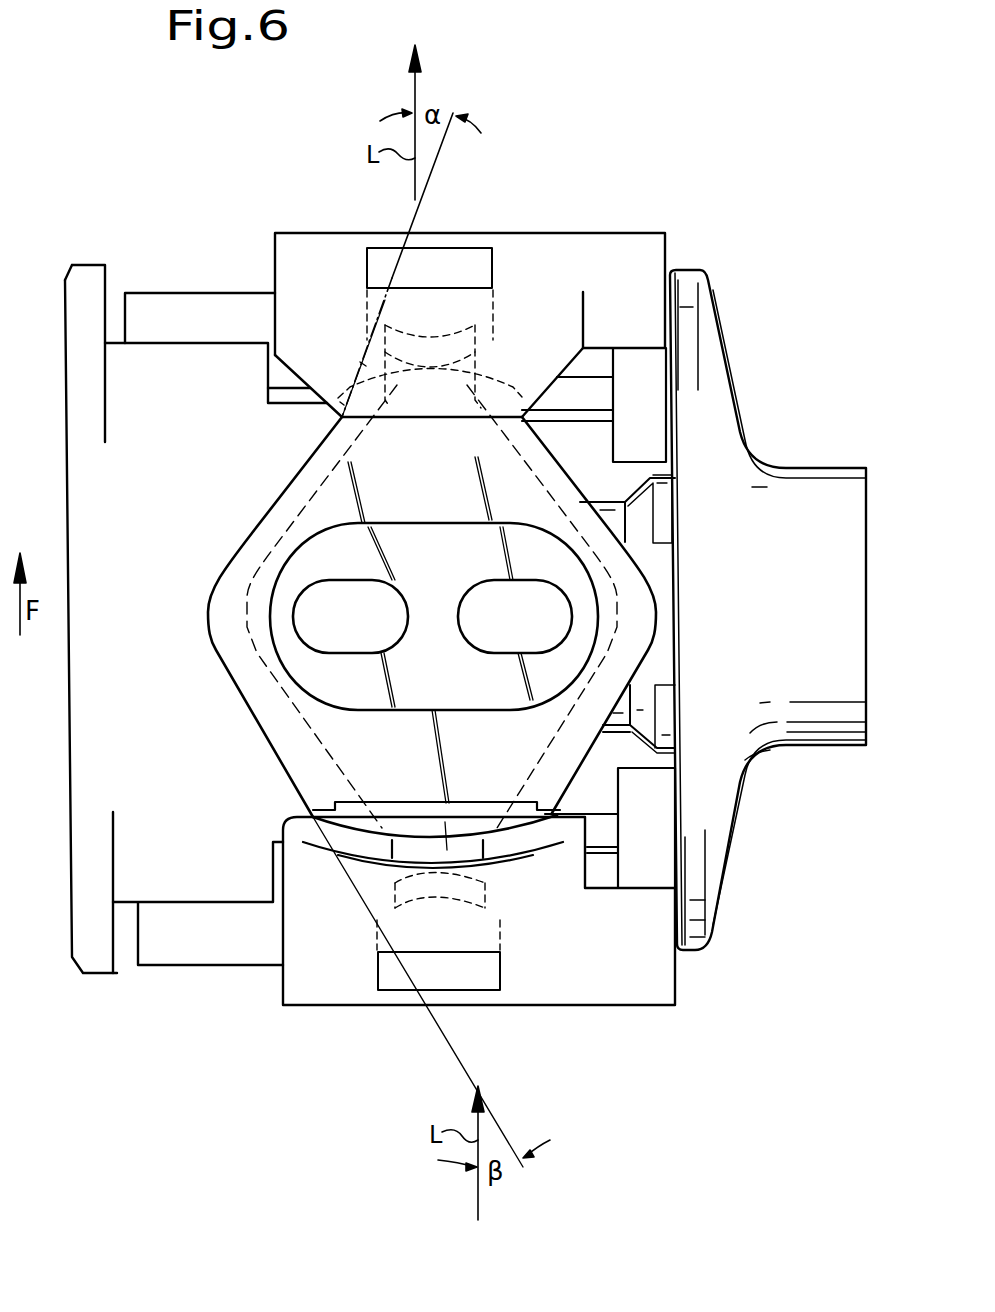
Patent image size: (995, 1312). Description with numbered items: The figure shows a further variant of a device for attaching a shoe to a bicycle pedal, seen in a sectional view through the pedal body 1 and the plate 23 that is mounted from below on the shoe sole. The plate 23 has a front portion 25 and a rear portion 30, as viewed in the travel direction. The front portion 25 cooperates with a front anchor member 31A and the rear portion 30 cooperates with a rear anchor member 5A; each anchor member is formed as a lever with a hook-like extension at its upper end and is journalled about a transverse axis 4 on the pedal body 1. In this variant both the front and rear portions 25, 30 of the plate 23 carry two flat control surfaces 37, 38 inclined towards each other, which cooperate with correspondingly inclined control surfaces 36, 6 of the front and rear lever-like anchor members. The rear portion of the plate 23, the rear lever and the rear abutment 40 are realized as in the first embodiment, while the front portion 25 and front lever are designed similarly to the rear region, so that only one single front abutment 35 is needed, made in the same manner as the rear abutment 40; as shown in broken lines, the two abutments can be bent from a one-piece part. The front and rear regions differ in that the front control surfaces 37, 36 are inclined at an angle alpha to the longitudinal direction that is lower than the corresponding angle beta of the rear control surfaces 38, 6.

The pedal body 1 is at (85, 493).
The transverse axis 4 is at (577, 398).
The rear anchor member 5A is at (614, 983).
The inclined control surfaces 6 is at (348, 868).
The plate 23 is at (228, 648).
The front portion 25 is at (392, 437).
The rear portion 30 is at (485, 810).
The front anchor member 31A is at (290, 257).
The front abutment 35 is at (490, 328).
The front control surfaces 36 is at (366, 366).
The front control surfaces 37 is at (344, 405).
The rear control surfaces 38 is at (321, 830).
The rear abutment 40 is at (458, 905).